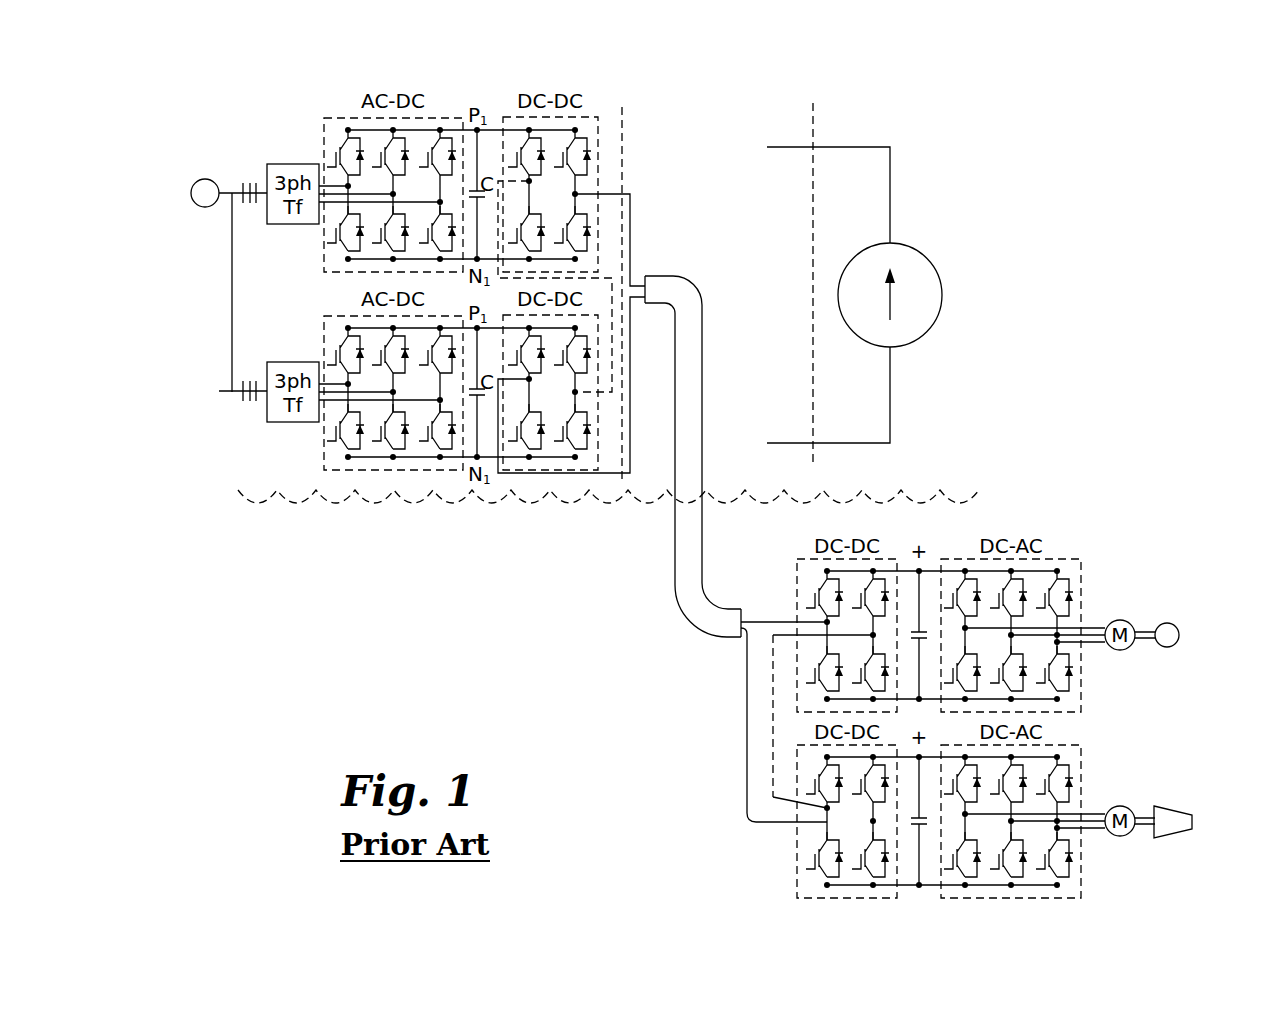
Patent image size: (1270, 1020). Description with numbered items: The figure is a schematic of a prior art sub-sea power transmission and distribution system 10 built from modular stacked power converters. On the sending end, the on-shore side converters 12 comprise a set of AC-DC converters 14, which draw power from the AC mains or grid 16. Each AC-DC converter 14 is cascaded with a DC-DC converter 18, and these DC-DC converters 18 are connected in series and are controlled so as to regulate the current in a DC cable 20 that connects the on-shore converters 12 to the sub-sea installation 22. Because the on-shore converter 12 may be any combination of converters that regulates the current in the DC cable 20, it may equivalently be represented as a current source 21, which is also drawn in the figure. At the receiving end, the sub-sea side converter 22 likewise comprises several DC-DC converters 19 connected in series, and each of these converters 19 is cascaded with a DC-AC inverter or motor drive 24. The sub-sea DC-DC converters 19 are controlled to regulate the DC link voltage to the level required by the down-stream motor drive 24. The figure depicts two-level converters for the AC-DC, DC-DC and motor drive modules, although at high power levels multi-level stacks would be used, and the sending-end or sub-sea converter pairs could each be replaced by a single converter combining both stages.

The system 10 is at (693, 122).
The sending end/on-shore side converters 12 is at (470, 96).
The AC-DC converters 14 is at (340, 106).
The AC mains or grid 16 is at (216, 184).
The DC-DC converter 18 is at (597, 104).
The DC-DC converters 19 is at (915, 546).
The DC cable 20 is at (692, 284).
The current source 21 is at (935, 269).
The sub-sea installation 22 is at (1153, 502).
The DC-AC inverter/motor drive 24 is at (1068, 546).